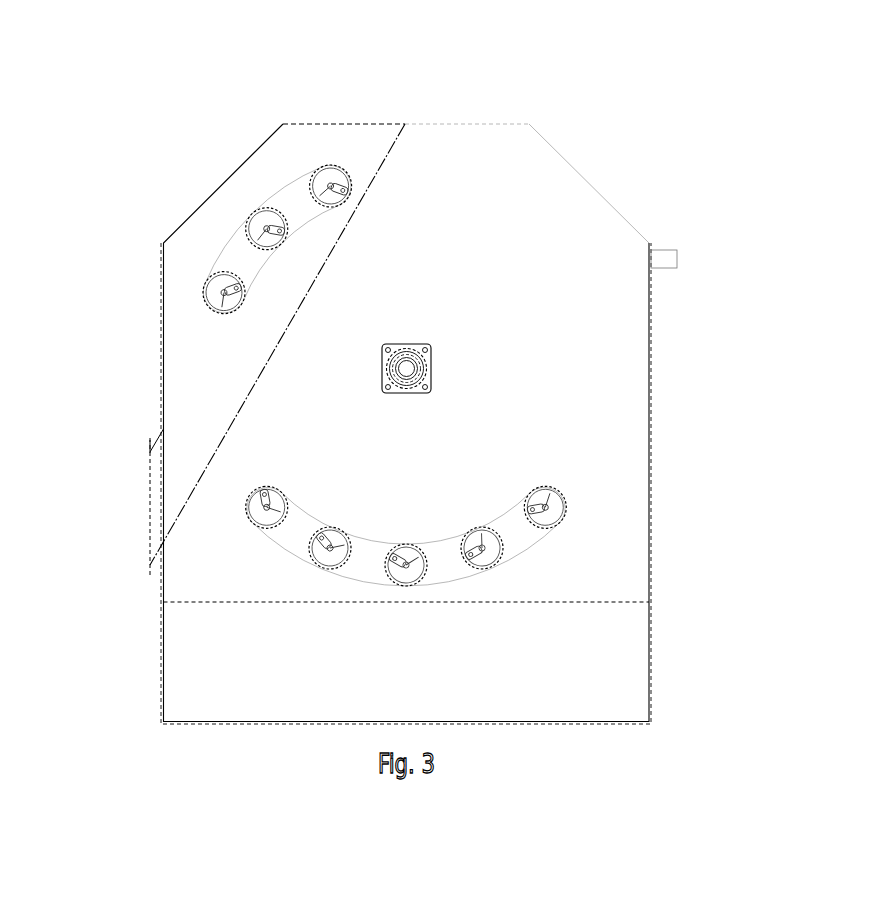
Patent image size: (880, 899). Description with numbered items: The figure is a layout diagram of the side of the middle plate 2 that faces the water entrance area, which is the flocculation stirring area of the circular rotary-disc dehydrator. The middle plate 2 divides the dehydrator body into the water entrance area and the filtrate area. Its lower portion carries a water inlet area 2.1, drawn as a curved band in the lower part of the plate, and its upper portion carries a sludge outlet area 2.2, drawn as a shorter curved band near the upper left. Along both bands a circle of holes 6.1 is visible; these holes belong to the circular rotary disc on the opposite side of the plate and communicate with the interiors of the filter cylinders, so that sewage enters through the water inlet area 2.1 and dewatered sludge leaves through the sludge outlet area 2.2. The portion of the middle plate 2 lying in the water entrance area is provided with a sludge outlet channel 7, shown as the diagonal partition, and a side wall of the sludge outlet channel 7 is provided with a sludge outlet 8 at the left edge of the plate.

The middle plate 2 is at (585, 316).
The water inlet area 2.1 is at (567, 513).
The sludge outlet area 2.2 is at (243, 257).
The holes 6.1 is at (331, 182).
The sludge outlet channel 7 is at (195, 357).
The sludge outlet 8 is at (155, 490).